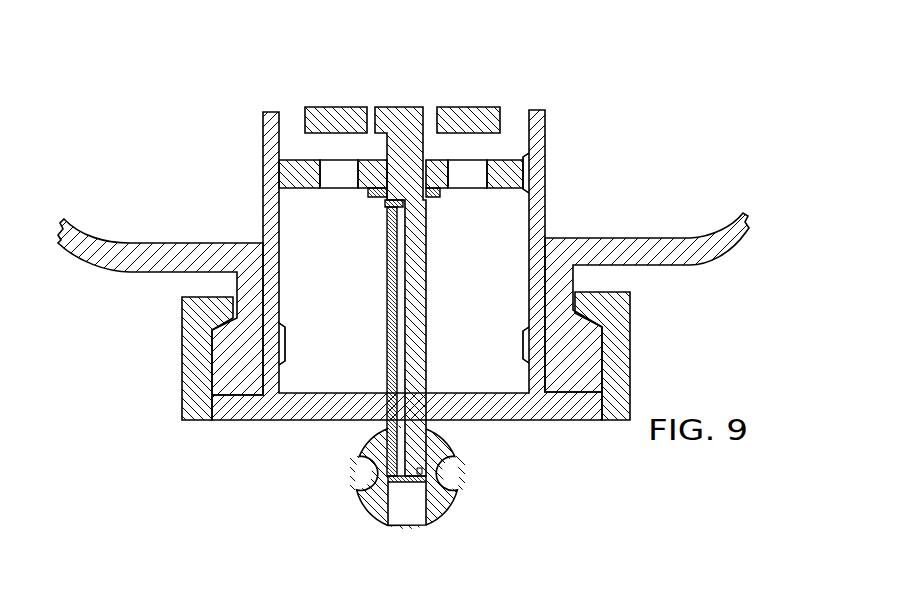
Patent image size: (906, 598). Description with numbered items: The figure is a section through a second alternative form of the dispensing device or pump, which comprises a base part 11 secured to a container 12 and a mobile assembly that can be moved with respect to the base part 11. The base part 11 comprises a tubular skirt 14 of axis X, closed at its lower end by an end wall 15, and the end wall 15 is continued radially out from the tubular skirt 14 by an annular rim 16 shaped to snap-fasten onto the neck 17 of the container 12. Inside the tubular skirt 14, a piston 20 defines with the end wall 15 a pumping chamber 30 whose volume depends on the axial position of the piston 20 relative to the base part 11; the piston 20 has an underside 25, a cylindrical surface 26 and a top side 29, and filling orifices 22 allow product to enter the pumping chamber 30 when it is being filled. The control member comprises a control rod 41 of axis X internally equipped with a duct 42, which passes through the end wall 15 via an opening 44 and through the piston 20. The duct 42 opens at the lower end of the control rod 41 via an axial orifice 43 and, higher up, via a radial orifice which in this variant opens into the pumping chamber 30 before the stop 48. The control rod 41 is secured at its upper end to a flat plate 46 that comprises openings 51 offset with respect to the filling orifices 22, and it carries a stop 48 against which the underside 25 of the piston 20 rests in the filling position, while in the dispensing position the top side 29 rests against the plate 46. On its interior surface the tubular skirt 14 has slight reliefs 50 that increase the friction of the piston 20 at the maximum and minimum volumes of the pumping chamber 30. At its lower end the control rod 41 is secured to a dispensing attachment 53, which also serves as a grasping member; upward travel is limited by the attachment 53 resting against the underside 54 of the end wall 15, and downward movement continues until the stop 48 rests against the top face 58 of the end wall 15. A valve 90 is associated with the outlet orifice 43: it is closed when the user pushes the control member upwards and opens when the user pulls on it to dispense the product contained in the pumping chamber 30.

The base part 11 is at (552, 103).
The container 12 is at (107, 253).
The tubular skirt 14 is at (544, 298).
The end wall 15 is at (343, 403).
The annular rim 16 is at (195, 383).
The neck 17 is at (223, 357).
The piston 20 is at (292, 192).
The filling orifices 22 is at (324, 170).
The underside 25 is at (300, 177).
The cylindrical surface 26 is at (443, 160).
The top side 29 is at (293, 160).
The pumping chamber 30 is at (511, 343).
The control rod 41 is at (427, 307).
The duct 42 is at (400, 353).
The axial orifice 43 is at (388, 478).
The opening 44 is at (433, 405).
The flat plate 46 is at (337, 110).
The stop 48 is at (370, 199).
The slight reliefs 50 is at (546, 167).
The openings 51 is at (433, 107).
The dispensing attachment 53 is at (372, 515).
The underside 54 is at (307, 423).
The top face 58 is at (483, 392).
The valve 90 is at (440, 513).